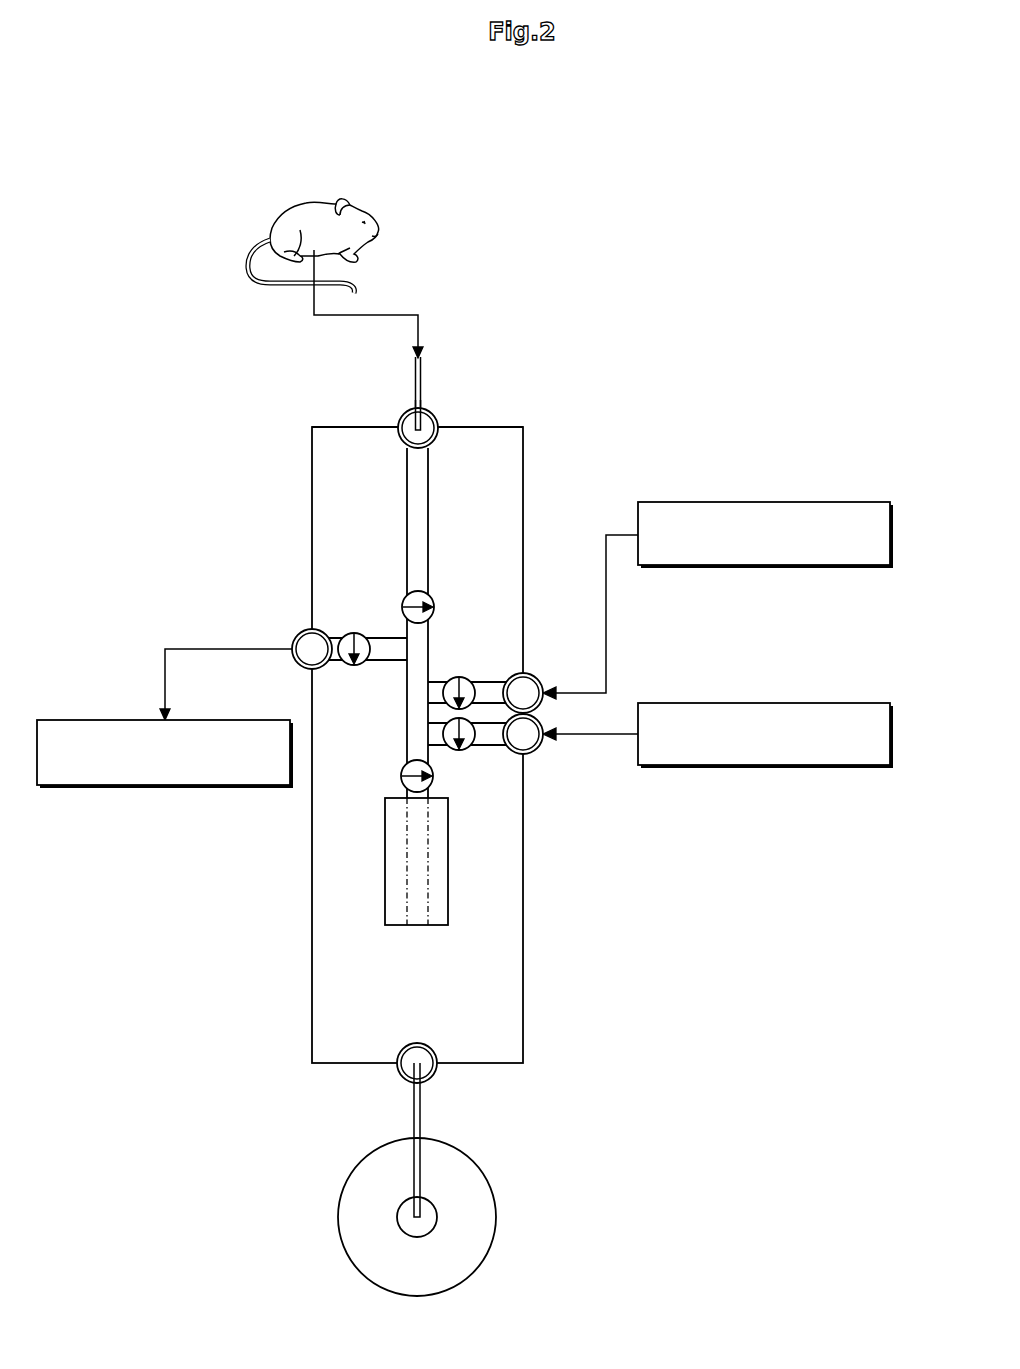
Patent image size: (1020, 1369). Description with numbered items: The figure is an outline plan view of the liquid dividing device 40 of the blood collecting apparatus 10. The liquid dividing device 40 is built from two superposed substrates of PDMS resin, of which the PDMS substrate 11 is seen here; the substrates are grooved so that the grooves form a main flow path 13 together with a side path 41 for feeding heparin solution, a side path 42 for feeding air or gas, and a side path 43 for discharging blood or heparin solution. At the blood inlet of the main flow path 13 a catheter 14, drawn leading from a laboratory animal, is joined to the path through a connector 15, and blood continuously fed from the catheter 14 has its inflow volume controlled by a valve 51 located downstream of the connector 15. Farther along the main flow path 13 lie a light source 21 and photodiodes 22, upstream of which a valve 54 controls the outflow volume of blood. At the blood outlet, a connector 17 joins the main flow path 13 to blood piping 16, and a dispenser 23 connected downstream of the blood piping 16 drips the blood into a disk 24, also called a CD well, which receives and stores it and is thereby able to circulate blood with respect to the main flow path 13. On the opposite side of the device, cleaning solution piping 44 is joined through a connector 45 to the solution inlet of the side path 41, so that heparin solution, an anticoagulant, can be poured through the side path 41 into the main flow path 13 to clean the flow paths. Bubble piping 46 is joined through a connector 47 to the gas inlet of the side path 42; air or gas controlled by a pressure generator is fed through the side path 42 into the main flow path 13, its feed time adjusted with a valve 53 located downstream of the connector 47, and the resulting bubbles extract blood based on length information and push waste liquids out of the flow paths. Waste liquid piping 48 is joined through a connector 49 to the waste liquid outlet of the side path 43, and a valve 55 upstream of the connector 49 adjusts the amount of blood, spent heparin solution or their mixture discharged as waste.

The blood collecting apparatus 10 is at (116, 189).
The PDMS substrate 11 is at (336, 425).
The main flow path 13 is at (425, 847).
The catheter 14 is at (413, 384).
The connector 15 is at (438, 415).
The blood piping 16 is at (413, 1120).
The connector 17 is at (432, 1077).
The light source 21 is at (448, 890).
The photodiodes 22 is at (496, 861).
The dispenser 23 is at (405, 1220).
The disk 24 is at (485, 1190).
The liquid dividing device 40 is at (310, 423).
The side path 41 is at (484, 696).
The side path 42 is at (468, 752).
The side path 43 is at (381, 645).
The cleaning solution piping 44 is at (838, 502).
The connector 45 is at (527, 672).
The bubble piping 46 is at (838, 703).
The connector 47 is at (530, 755).
The waste liquid piping 48 is at (63, 787).
The connector 49 is at (301, 631).
The valve 51 is at (403, 597).
The valve 53 is at (488, 742).
The valve 54 is at (402, 774).
The valve 55 is at (350, 668).